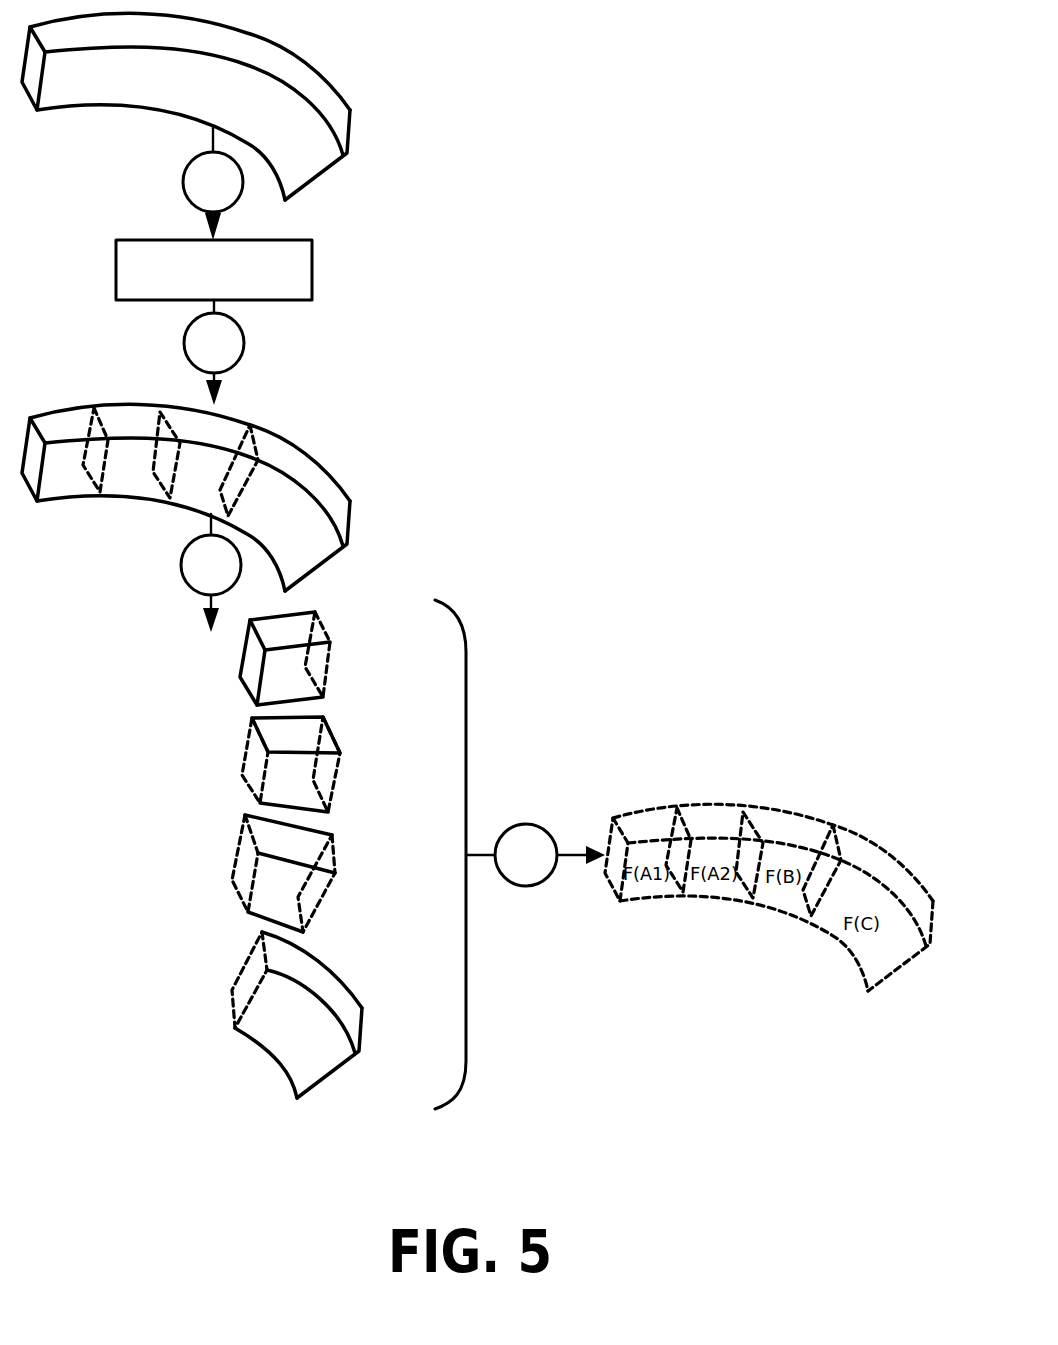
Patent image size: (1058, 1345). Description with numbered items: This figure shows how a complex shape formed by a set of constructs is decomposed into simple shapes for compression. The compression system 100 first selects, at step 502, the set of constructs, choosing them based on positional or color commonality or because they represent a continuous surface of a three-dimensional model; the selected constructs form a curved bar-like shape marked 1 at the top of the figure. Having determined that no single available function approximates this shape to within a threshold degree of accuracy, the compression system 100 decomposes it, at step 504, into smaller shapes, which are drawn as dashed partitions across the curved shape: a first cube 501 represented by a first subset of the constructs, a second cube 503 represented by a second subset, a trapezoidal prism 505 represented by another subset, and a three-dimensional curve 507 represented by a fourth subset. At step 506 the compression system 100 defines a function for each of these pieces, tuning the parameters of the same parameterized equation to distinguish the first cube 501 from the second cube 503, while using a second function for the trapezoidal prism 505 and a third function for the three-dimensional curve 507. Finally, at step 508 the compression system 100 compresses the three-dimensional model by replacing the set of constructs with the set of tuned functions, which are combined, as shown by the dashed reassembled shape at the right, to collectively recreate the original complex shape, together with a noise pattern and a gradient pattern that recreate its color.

The curved bar component 1 is at (325, 132).
The compression system 100 is at (199, 282).
The first cube 501 is at (63, 428).
The selecting the set of constructs 502 is at (198, 193).
The second cube 503 is at (140, 428).
The decomposing the shape 504 is at (199, 354).
The trapezoidal prism 505 is at (203, 487).
The defining a function 506 is at (196, 576).
The 3D curve 507 is at (298, 462).
The compressing the 3D model 508 is at (511, 866).